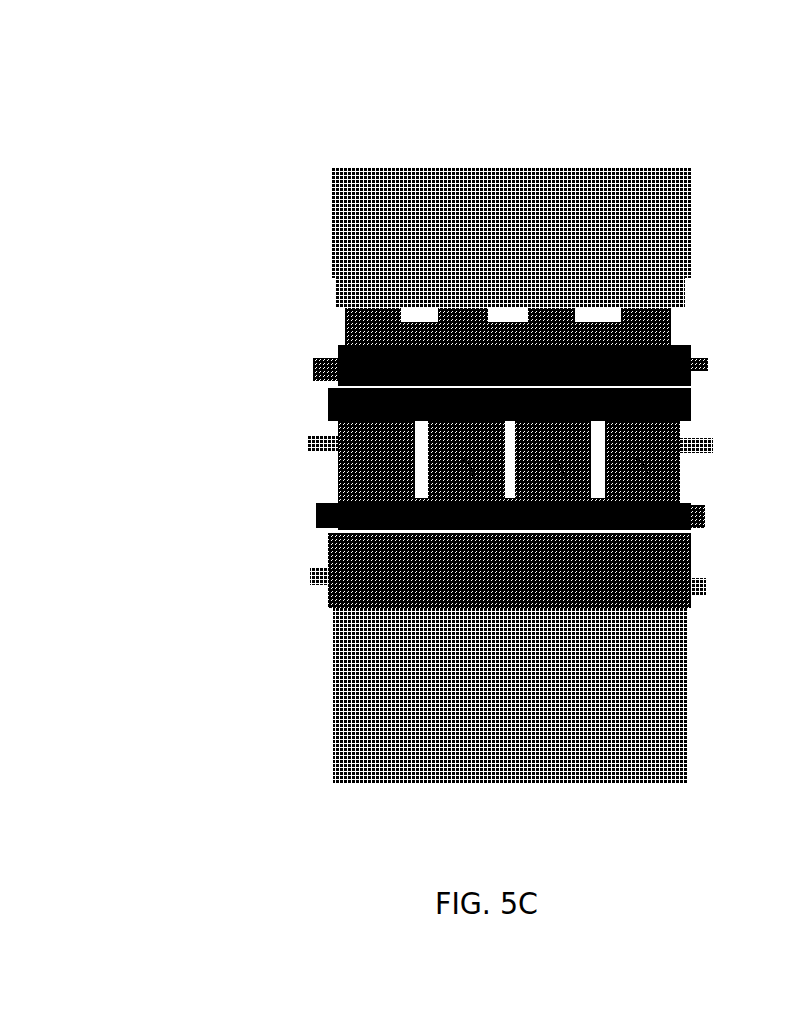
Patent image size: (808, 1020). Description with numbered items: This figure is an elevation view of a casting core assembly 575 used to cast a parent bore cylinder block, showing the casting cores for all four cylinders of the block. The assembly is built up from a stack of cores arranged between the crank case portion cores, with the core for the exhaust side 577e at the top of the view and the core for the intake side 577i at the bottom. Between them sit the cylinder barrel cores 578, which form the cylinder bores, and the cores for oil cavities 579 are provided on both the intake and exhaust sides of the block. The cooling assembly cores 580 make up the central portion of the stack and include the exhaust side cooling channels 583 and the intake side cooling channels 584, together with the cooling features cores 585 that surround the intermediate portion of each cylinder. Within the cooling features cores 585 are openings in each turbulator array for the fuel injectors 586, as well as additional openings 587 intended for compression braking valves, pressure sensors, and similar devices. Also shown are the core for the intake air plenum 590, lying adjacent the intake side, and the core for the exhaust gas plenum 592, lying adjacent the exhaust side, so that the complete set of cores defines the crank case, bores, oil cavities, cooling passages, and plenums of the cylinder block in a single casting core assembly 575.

The casting core assembly 575 is at (365, 117).
The exhaust side crank case portion core 577e is at (625, 227).
The intake side crank case portion core 577i is at (397, 710).
The cylinder barrel cores 578 is at (385, 332).
The oil cavity cores 579 is at (582, 318).
The cooling assembly cores 580 is at (288, 507).
The exhaust side cooling channels 583 is at (697, 356).
The intake side cooling channels 584 is at (688, 512).
The cooling features cores 585 is at (678, 445).
The fuel injector openings 586 is at (378, 470).
The additional openings 587 is at (615, 470).
The intake air plenum core 590 is at (667, 588).
The exhaust gas plenum core 592 is at (677, 397).